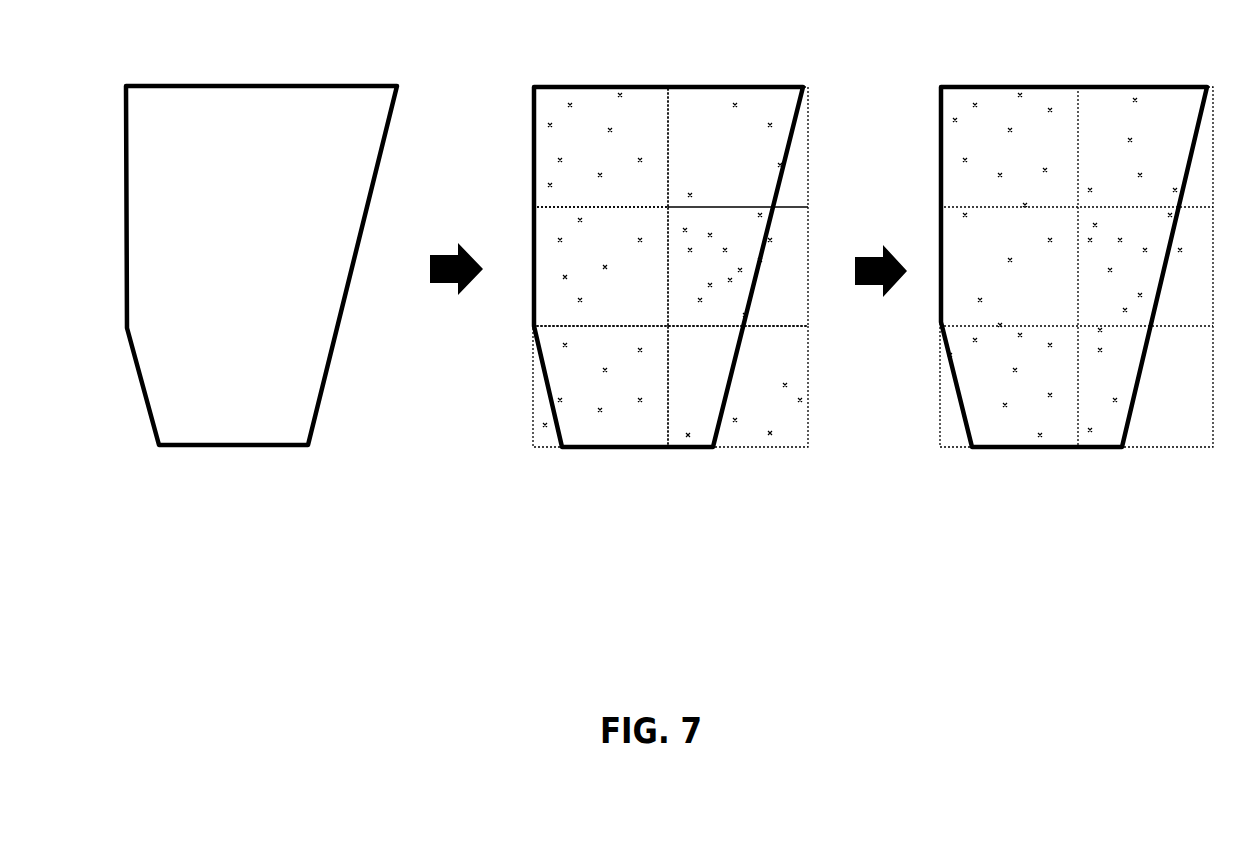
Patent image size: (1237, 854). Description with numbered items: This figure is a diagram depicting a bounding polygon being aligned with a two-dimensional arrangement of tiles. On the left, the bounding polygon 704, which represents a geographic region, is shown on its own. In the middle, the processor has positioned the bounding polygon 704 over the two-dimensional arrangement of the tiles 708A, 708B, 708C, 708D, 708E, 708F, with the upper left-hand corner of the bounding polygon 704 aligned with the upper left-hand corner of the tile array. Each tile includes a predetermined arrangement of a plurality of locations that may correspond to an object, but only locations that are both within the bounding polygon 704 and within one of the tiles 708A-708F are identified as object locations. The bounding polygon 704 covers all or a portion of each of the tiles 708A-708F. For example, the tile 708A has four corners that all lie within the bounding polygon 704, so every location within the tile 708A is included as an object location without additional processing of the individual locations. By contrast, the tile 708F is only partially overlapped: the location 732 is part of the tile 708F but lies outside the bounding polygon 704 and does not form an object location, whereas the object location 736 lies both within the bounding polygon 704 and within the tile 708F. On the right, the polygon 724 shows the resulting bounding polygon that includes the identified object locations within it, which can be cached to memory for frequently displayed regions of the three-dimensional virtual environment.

The bounding polygon 704 is at (272, 447).
The tile 708A is at (533, 150).
The tile 708B is at (807, 168).
The tile 708C is at (533, 275).
The tile 708D is at (807, 290).
The tile 708E is at (533, 425).
The tile 708F is at (810, 438).
The location 732 is at (770, 435).
The object location 736 is at (688, 437).
The polygon 724 is at (983, 452).